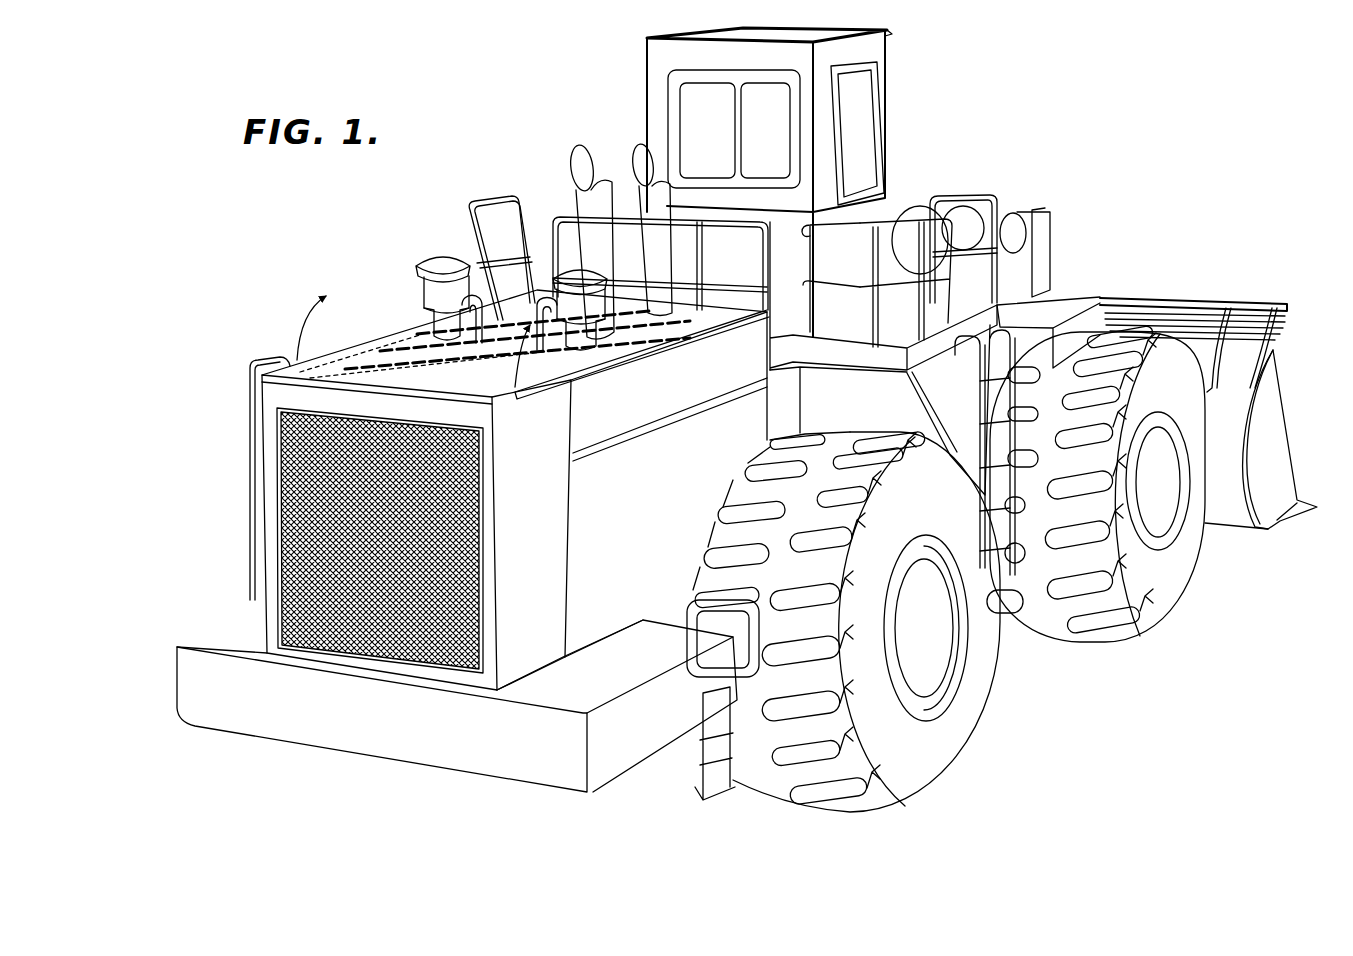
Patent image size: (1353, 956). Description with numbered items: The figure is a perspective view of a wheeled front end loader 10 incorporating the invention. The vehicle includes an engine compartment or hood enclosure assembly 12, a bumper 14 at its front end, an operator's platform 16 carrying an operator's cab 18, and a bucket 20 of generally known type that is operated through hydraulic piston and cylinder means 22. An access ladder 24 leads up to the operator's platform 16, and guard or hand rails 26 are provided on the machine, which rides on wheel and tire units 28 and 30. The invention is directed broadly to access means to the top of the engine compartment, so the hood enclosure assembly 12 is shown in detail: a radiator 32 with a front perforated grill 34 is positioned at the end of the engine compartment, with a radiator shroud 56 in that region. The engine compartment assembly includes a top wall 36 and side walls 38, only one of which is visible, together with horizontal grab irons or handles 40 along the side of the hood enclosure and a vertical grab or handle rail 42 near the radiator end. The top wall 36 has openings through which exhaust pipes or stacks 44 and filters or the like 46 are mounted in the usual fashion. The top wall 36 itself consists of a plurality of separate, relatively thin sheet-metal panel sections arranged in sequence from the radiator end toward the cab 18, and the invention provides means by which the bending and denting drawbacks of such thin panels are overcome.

The front end loader 10 is at (364, 268).
The engine compartment or hood enclosure assembly 12 is at (391, 330).
The bumper 14 is at (214, 634).
The operator's platform 16 is at (862, 335).
The operator's cab 18 is at (879, 44).
The bucket 20 is at (1273, 404).
The hydraulic piston and cylinder means 22 is at (1006, 225).
The access ladder 24 is at (981, 398).
The guard or hand rails 26 is at (504, 194).
The wheel and tire unit 28 is at (975, 679).
The wheel and tire unit 30 is at (1170, 591).
The radiator 32 is at (279, 502).
The front perforated grill 34 is at (291, 540).
The top wall 36 is at (346, 363).
The side walls 38 is at (678, 493).
The horizontal grab irons or handles 40 is at (632, 366).
The vertical grab or handle rail 42 is at (256, 354).
The exhaust pipes or stacks 44 is at (616, 150).
The filters 46 is at (447, 262).
The radiator shroud 56 is at (545, 458).